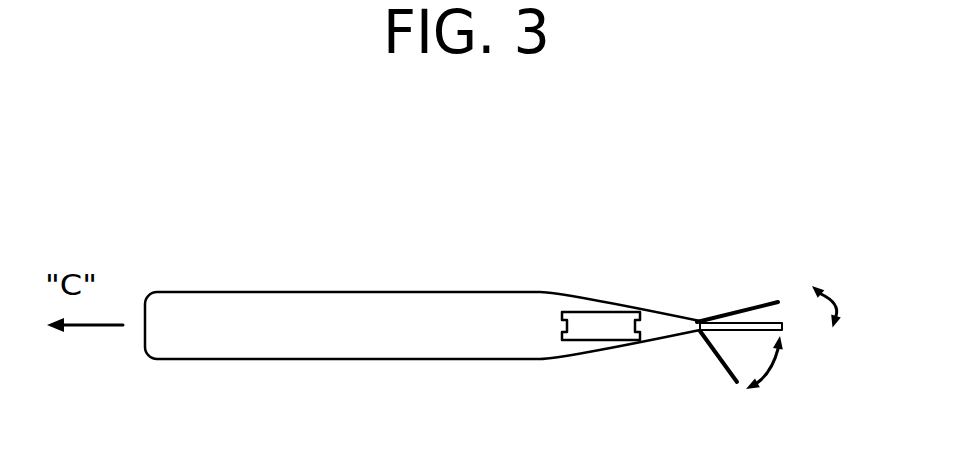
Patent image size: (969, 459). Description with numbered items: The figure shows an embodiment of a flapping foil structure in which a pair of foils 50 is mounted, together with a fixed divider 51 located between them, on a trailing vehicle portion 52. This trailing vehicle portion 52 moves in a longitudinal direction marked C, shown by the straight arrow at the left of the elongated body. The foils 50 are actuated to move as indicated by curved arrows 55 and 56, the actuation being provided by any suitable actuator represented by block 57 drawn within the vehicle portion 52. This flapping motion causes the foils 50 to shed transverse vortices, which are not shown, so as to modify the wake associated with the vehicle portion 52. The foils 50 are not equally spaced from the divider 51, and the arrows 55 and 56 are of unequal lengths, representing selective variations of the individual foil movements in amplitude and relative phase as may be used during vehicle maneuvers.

The foils 50 is at (717, 317).
The fixed divider 51 is at (782, 327).
The trailing vehicle portion 52 is at (657, 323).
The curved arrow 55 is at (834, 300).
The curved arrow 56 is at (772, 360).
The actuator block 57 is at (592, 312).